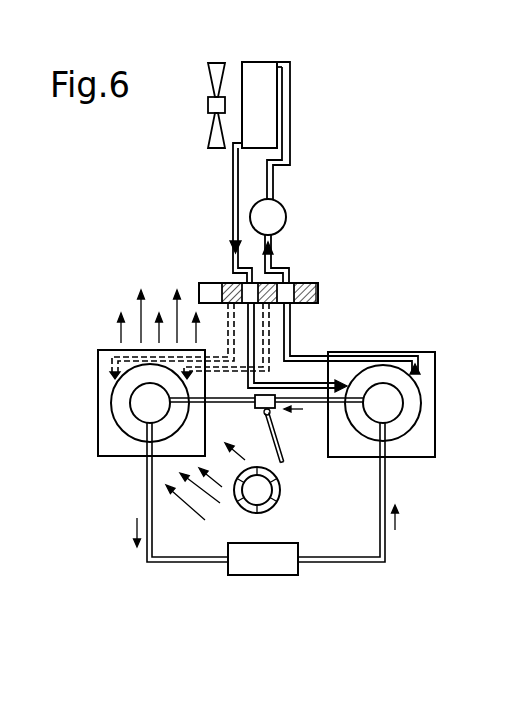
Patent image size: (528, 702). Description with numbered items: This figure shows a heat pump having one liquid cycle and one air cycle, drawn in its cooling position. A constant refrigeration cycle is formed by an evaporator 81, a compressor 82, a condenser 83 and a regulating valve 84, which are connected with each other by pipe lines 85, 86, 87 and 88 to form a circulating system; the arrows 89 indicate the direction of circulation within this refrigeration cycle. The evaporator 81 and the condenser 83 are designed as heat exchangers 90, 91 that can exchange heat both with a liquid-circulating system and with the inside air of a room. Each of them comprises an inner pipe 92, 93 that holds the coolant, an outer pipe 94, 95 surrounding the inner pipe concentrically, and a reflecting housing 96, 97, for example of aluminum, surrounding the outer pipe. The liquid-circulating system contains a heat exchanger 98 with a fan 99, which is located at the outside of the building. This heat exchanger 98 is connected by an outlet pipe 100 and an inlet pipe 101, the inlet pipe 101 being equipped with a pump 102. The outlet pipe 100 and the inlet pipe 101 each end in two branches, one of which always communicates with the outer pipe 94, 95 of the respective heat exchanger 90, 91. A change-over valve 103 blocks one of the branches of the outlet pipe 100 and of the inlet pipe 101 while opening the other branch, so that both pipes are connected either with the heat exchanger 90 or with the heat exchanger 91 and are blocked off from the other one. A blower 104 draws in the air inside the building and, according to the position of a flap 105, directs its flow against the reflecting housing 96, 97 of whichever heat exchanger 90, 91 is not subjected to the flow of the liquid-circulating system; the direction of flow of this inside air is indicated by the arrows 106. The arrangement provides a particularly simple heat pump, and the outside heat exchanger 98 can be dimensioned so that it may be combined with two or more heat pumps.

The evaporator 81 is at (122, 408).
The compressor 82 is at (252, 569).
The condenser 83 is at (412, 398).
The regulating valve 84 is at (253, 408).
The pipe line 85 is at (147, 486).
The pipe line 86 is at (328, 565).
The pipe line 87 is at (316, 411).
The pipe line 88 is at (213, 398).
The arrows 89 is at (137, 528).
The heat exchanger 90 is at (94, 345).
The heat exchanger 91 is at (438, 349).
The inner pipe 92 is at (113, 395).
The inner pipe 93 is at (407, 412).
The outer pipe 94 is at (112, 456).
The outer pipe 95 is at (400, 459).
The reflecting housing 96 is at (97, 367).
The reflecting housing 97 is at (436, 364).
The heat exchanger 98 is at (252, 66).
The fan 99 is at (204, 74).
The outlet pipe 100 is at (233, 172).
The inlet pipe 101 is at (291, 124).
The pump 102 is at (286, 208).
The change-over valve 103 is at (314, 278).
The blower 104 is at (266, 510).
The flap 105 is at (284, 464).
The arrows 106 is at (140, 312).